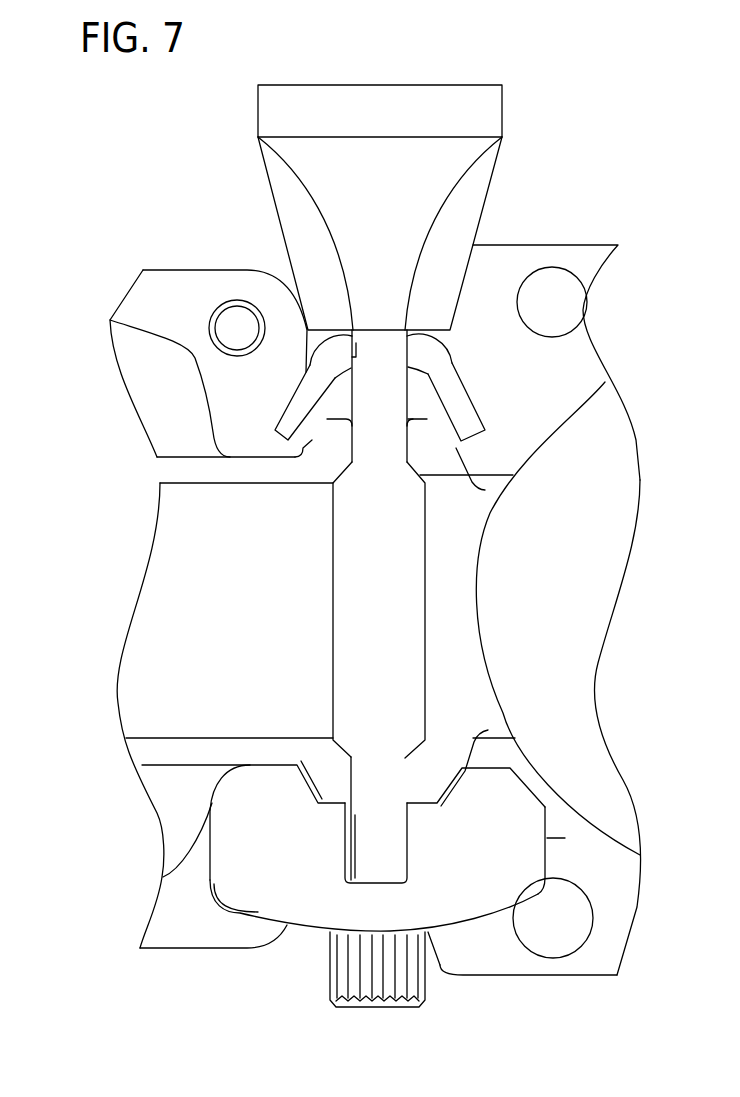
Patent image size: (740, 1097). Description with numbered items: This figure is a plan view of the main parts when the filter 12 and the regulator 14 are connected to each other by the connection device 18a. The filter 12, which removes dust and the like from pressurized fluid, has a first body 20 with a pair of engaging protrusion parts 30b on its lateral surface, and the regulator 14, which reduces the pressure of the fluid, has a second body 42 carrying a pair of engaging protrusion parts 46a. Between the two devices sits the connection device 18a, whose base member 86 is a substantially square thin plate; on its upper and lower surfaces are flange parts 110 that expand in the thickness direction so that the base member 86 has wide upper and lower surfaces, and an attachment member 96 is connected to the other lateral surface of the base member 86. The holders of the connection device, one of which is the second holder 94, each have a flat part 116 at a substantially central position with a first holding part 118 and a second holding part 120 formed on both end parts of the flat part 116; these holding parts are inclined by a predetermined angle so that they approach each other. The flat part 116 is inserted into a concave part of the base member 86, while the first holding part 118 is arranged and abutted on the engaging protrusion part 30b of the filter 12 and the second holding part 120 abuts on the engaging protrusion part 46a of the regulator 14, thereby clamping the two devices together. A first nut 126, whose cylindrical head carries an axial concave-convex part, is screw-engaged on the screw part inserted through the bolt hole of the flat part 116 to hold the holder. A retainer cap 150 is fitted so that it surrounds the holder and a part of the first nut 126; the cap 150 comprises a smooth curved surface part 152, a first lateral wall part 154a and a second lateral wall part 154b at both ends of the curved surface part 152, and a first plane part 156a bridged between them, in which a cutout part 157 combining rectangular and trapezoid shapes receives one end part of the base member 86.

The attachment member 96 is at (358, 96).
The connection device 18a is at (518, 110).
The filter 12 is at (86, 330).
The regulator 14 is at (602, 330).
The second body 42 is at (600, 613).
The flange part 110 is at (365, 578).
The base member 86 is at (323, 622).
The flat part 116 is at (337, 353).
The first holding part 118 is at (307, 413).
The second holding part 120 is at (445, 401).
The second holder 94 is at (479, 387).
The engaging protrusion part 30b is at (313, 448).
The engaging protrusion part 46a is at (452, 472).
The first body 20 is at (136, 706).
The retainer cap 150 is at (344, 848).
The cutout part 157 is at (395, 832).
The first lateral wall part 154a is at (565, 838).
The second lateral wall part 154b is at (210, 842).
The curved surface part 152 is at (522, 949).
The first plane part 156a is at (443, 910).
The first nut 126 is at (338, 981).